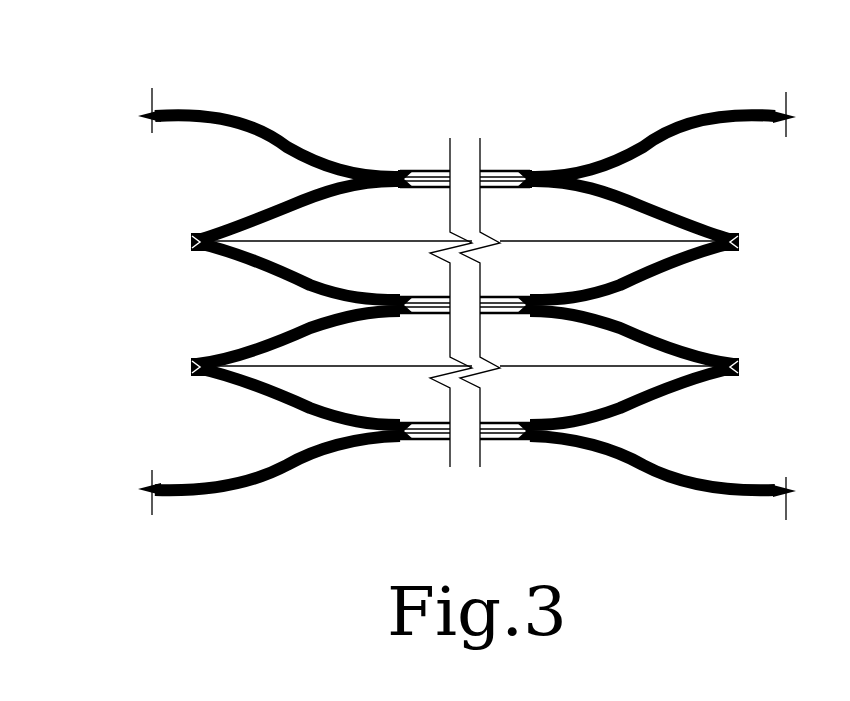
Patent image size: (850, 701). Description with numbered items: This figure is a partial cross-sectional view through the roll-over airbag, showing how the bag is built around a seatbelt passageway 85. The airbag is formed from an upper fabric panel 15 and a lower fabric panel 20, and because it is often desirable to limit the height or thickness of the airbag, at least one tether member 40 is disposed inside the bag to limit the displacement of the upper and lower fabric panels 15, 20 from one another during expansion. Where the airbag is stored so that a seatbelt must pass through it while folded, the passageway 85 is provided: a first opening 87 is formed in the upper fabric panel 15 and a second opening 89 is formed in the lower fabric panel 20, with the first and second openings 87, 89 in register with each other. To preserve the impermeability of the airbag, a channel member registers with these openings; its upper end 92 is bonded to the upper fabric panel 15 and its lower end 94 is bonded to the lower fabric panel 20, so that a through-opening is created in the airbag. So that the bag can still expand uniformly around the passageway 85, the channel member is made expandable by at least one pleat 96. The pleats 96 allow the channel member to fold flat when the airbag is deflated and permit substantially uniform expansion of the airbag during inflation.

The upper fabric panel 15 is at (242, 113).
The lower fabric panel 20 is at (226, 495).
The tether member 40 is at (688, 217).
The passageway 85 is at (504, 176).
The first opening 87 is at (428, 170).
The second opening 89 is at (417, 441).
The upper end 92 is at (400, 188).
The lower end 94 is at (420, 423).
The pleat 96 is at (192, 241).